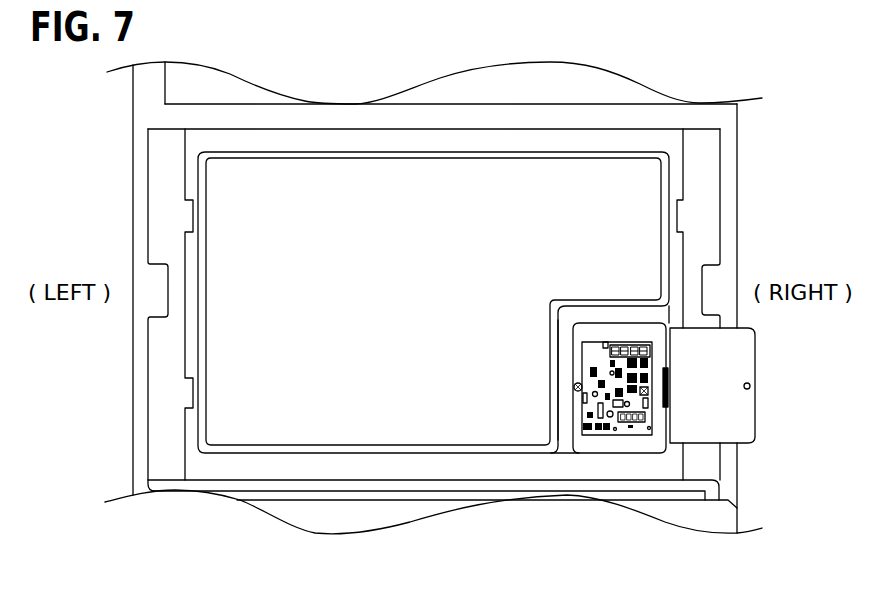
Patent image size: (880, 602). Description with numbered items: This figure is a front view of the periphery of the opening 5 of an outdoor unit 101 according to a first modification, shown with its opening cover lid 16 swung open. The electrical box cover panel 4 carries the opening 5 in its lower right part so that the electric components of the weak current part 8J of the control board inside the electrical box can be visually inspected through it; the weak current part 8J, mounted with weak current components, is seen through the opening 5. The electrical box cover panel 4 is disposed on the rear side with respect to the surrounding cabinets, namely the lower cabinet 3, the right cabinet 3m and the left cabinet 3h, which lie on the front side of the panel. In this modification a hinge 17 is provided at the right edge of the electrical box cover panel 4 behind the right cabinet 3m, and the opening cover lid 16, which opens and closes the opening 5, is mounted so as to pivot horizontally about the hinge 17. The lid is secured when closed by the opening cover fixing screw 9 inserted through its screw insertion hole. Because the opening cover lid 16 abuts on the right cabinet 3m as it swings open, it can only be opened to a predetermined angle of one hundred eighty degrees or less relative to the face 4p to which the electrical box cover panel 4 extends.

The outdoor unit 101 is at (757, 82).
The lower cabinet 3 is at (320, 517).
The left cabinet 3h is at (170, 360).
The right cabinet 3m is at (704, 211).
The electrical box cover panel 4 is at (247, 388).
The face 4p is at (567, 427).
The opening 5 is at (631, 429).
The weak current part 8J is at (651, 418).
The opening cover fixing screw 9 is at (751, 386).
The opening cover lid 16 is at (730, 363).
The hinge 17 is at (673, 384).